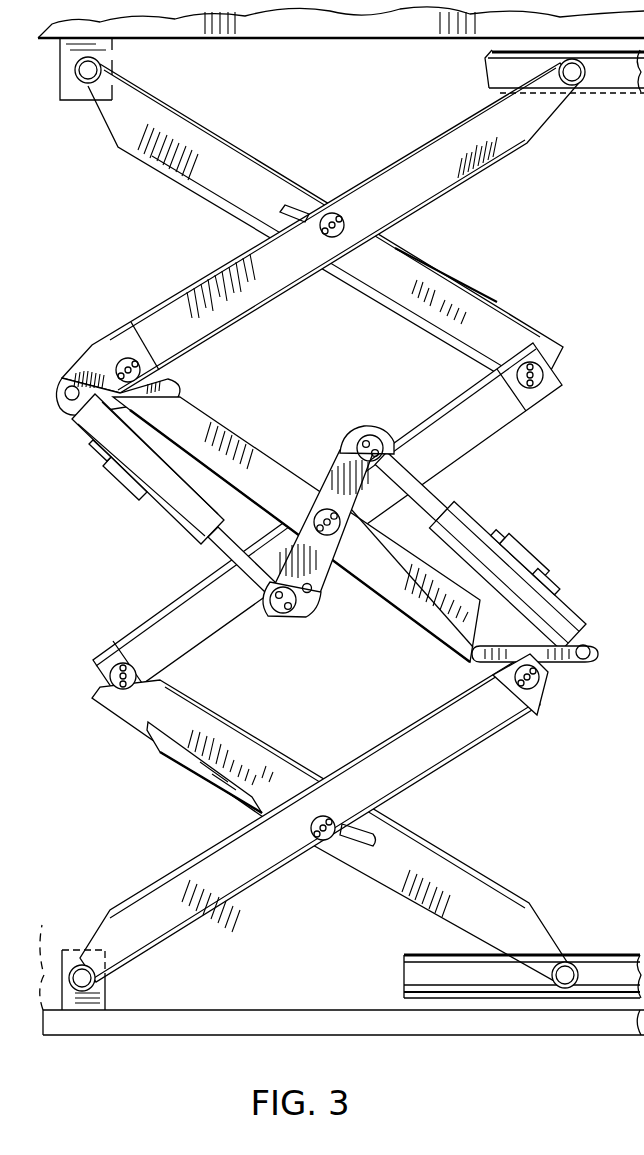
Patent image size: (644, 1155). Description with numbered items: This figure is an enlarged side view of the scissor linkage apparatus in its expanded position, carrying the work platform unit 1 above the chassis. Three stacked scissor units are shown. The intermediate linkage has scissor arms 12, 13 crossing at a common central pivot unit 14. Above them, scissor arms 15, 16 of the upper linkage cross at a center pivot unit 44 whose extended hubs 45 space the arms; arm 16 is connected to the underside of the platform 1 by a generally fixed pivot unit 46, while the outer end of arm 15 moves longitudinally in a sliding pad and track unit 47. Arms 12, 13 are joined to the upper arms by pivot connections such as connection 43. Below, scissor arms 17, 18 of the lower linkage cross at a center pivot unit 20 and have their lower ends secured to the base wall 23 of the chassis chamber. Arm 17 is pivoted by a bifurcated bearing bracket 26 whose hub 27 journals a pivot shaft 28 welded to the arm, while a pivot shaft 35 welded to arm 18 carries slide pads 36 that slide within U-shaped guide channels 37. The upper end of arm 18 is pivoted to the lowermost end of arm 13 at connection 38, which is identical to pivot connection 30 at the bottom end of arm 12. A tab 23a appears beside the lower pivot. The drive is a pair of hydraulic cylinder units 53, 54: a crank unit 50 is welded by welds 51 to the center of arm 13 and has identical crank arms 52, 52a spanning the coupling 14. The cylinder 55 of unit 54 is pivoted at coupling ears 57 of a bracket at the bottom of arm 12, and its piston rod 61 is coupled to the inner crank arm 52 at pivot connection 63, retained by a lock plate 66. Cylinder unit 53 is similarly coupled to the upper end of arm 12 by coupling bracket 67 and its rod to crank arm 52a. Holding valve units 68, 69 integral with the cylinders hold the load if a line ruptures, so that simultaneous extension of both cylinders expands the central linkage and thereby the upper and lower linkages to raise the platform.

The work platform unit 1 is at (366, 44).
The scissor arm 12 is at (470, 637).
The scissor arm 13 is at (495, 407).
The central pivot unit 14 is at (338, 535).
The scissor arm 15 is at (440, 207).
The scissor arm 16 is at (228, 190).
The scissor arm 17 is at (205, 908).
The scissor arm 18 is at (470, 860).
The center pivot unit 20 is at (313, 838).
The base wall 23 is at (250, 805).
The stop tab 23a is at (362, 848).
The bifurcated bearing bracket 26 is at (100, 980).
The hub 27 is at (76, 985).
The pivot shaft 28 is at (95, 985).
The pivot connection 30 is at (527, 692).
The pivot shaft 35 is at (560, 985).
The slide pad 36 is at (570, 970).
The guide channel 37 is at (400, 995).
The pivot connection 38 is at (125, 658).
The pivot connection 43 is at (142, 364).
The center pivot unit 44 is at (334, 210).
The extended hub 45 is at (295, 615).
The fixed pivot unit 46 is at (98, 68).
The sliding pad and track unit 47 is at (575, 82).
The crank unit 50 is at (345, 436).
The welds 51 is at (287, 537).
The crank arm 52 is at (380, 436).
The crank arm 52a is at (313, 591).
The cylinder unit 53 is at (173, 493).
The cylinder unit 54 is at (492, 551).
The cylinder 55 is at (550, 615).
The coupling ears 57 is at (574, 660).
The piston rod 61 is at (440, 505).
The pivot connection 63 is at (396, 433).
The lock plate 66 is at (346, 447).
The coupling bracket 67 is at (74, 383).
The holding valve unit 68 is at (528, 567).
The holding valve unit 69 is at (132, 505).